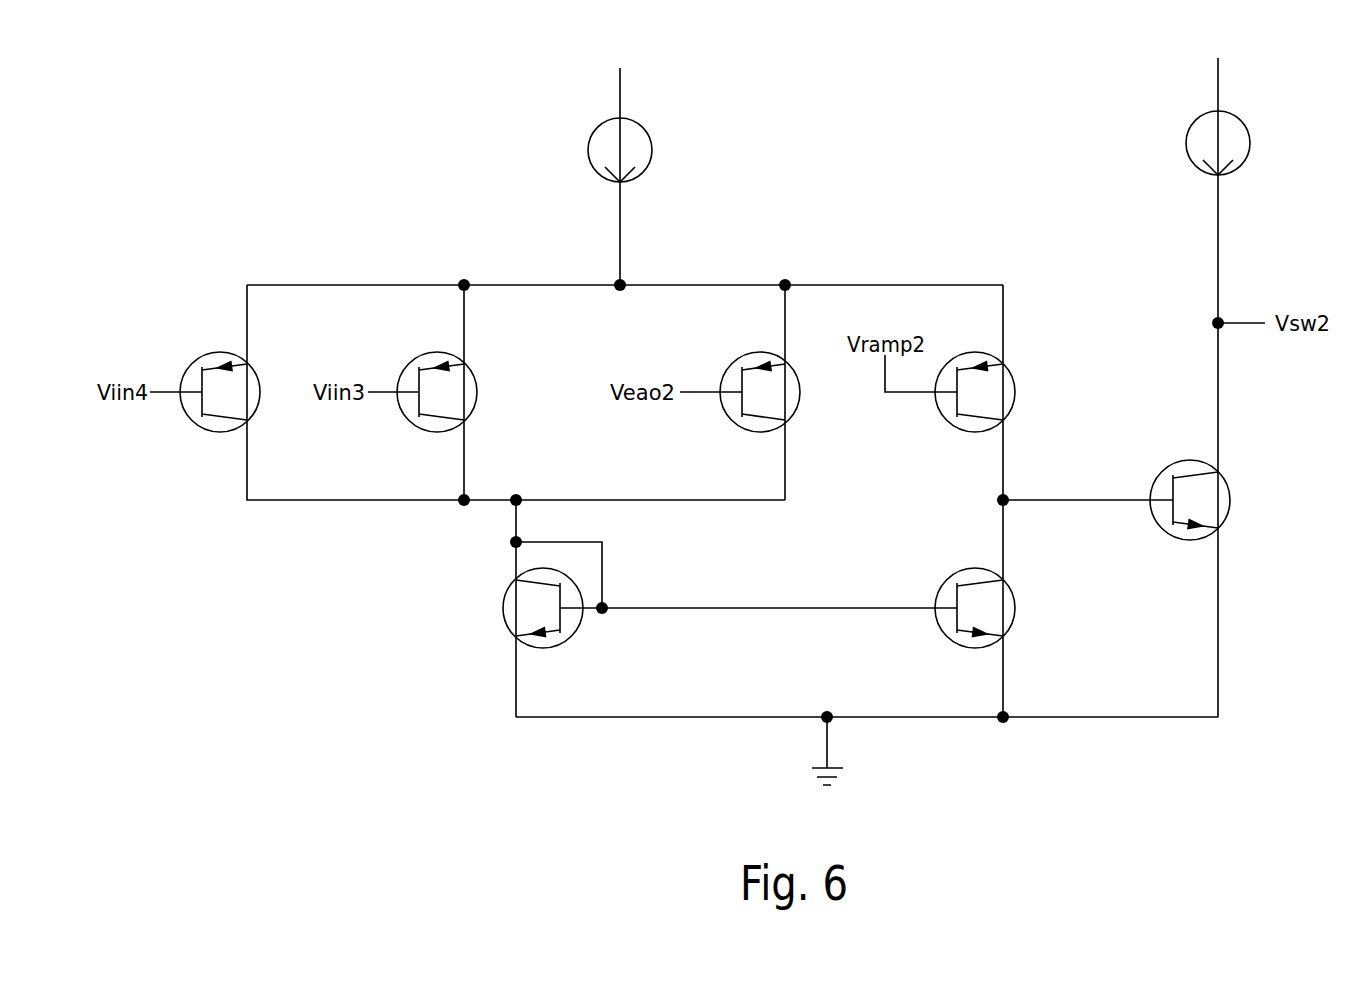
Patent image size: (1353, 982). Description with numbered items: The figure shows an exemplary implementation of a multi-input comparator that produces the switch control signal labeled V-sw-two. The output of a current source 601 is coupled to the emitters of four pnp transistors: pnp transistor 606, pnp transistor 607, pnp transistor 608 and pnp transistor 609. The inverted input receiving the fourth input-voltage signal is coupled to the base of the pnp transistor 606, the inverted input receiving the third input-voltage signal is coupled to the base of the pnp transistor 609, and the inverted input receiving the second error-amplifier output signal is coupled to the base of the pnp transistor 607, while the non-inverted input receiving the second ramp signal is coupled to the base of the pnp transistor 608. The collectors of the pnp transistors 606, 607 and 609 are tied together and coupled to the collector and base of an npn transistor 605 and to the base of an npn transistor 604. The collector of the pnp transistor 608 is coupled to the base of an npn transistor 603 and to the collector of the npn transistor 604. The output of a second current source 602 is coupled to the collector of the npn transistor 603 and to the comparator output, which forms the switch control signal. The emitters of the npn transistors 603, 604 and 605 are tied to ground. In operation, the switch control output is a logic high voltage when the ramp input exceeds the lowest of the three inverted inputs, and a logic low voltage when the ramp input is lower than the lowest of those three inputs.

The current source 601 is at (588, 148).
The current source 602 is at (1190, 125).
The npn transistor 603 is at (1170, 468).
The npn transistor 604 is at (1008, 617).
The npn transistor 605 is at (505, 602).
The pnp transistor 606 is at (187, 370).
The pnp transistor 607 is at (730, 370).
The pnp transistor 608 is at (1005, 415).
The pnp transistor 609 is at (410, 363).